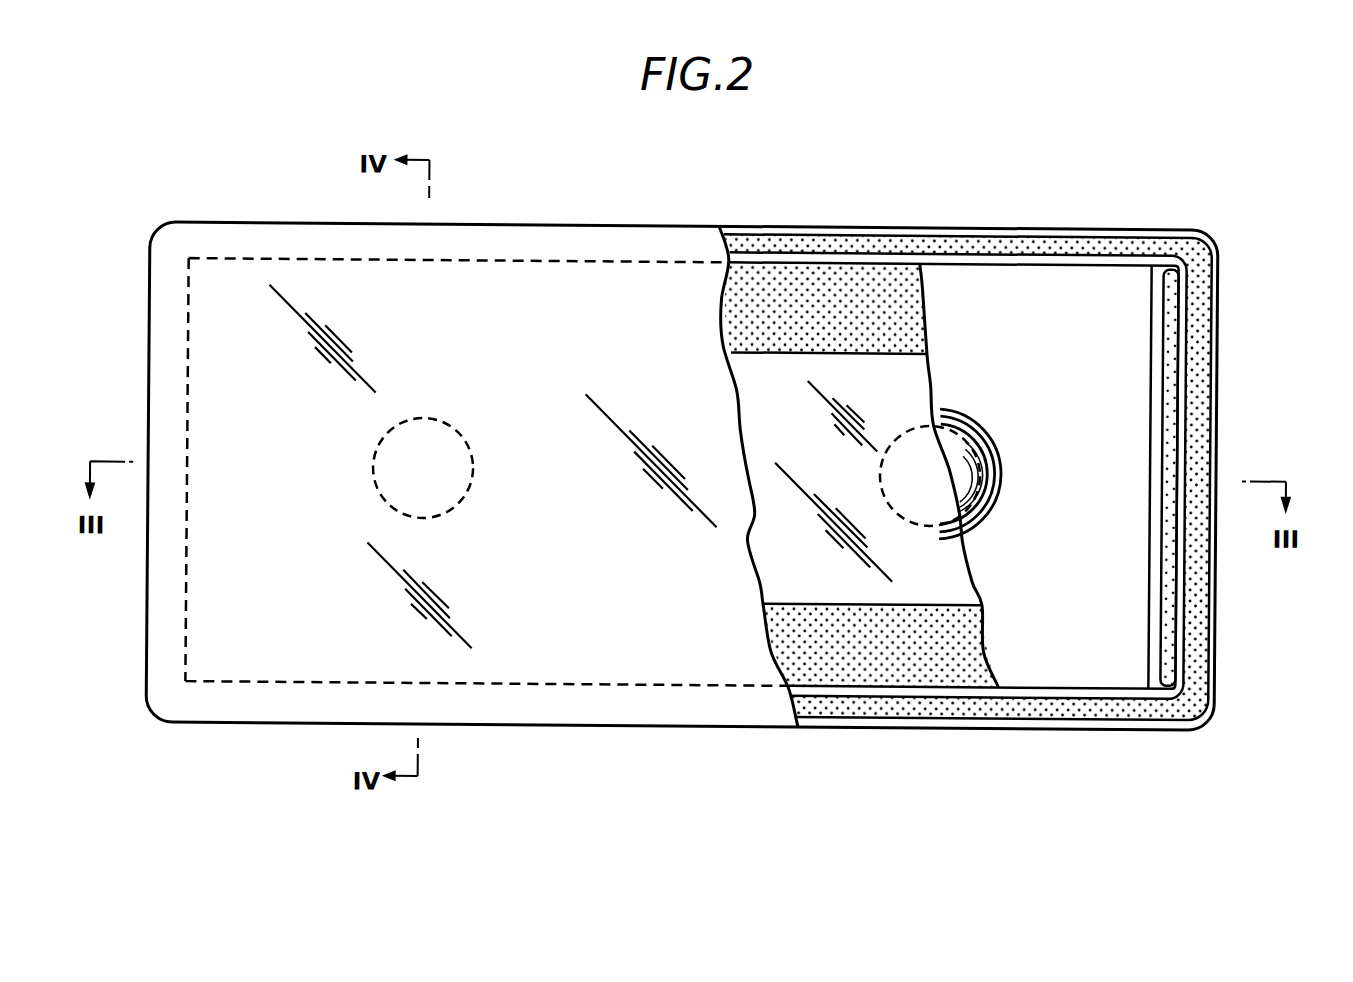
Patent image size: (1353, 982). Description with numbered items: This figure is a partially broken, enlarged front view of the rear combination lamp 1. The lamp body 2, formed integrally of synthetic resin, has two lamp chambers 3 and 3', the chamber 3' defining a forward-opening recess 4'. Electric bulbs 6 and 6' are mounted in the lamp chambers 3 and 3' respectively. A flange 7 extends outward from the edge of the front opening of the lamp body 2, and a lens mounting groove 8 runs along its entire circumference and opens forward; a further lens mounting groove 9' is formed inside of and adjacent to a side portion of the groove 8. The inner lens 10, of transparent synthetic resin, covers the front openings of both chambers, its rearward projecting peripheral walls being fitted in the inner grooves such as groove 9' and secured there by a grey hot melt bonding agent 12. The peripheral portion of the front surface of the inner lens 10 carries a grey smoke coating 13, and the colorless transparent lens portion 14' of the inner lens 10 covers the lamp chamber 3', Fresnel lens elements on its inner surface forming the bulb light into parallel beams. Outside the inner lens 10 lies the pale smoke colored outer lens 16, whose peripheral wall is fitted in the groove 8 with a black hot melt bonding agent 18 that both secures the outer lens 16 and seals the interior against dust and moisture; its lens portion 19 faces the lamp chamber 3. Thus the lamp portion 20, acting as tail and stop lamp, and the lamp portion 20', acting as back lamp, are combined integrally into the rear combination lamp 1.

The rear combination lamp 1 is at (1019, 156).
The lamp body 2 is at (1218, 264).
The lamp chamber 3 is at (488, 420).
The lamp chamber 3' is at (1116, 222).
The recess 4' is at (1001, 475).
The electric bulb 6 is at (459, 468).
The electric bulb 6' is at (973, 474).
The flange 7 is at (1215, 308).
The lens mounting groove 8 is at (1212, 400).
The lens mounting groove 9' is at (1213, 478).
The inner lens 10 is at (760, 408).
The hot melt bonding agent 12 is at (1163, 530).
The smoke coating 13 is at (840, 285).
The lens portion 14' is at (959, 476).
The outer lens 16 is at (632, 300).
The hot melt bonding agent 18 is at (788, 240).
The lens portion 19 is at (520, 315).
The lamp portion 20 is at (293, 690).
The lamp portion 20' is at (1081, 709).